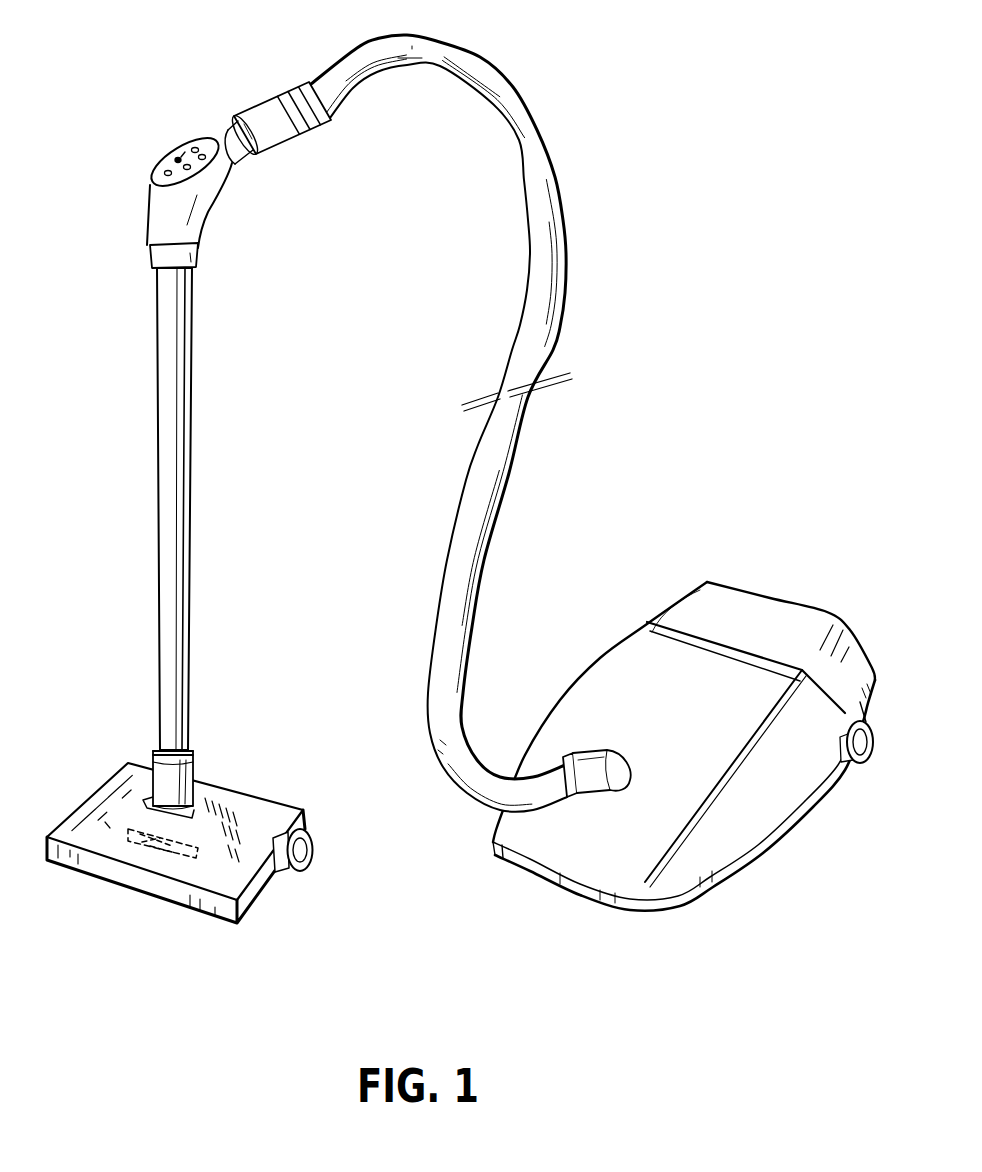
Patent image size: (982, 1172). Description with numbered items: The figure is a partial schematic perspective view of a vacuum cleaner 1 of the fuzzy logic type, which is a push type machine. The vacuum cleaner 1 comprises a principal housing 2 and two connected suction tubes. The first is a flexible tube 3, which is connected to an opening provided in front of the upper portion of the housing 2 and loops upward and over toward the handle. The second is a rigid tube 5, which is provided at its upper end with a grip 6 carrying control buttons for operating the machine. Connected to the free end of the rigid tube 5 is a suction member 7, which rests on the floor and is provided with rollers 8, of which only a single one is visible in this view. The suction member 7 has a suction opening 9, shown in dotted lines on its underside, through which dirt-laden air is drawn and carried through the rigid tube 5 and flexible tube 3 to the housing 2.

The vacuum cleaner 1 is at (655, 228).
The principal housing 2 is at (741, 615).
The flexible tube 3 is at (513, 474).
The rigid tube 5 is at (159, 445).
The grip 6 is at (188, 140).
The suction member 7 is at (229, 802).
The rollers 8 is at (312, 851).
The suction opening 9 is at (168, 855).